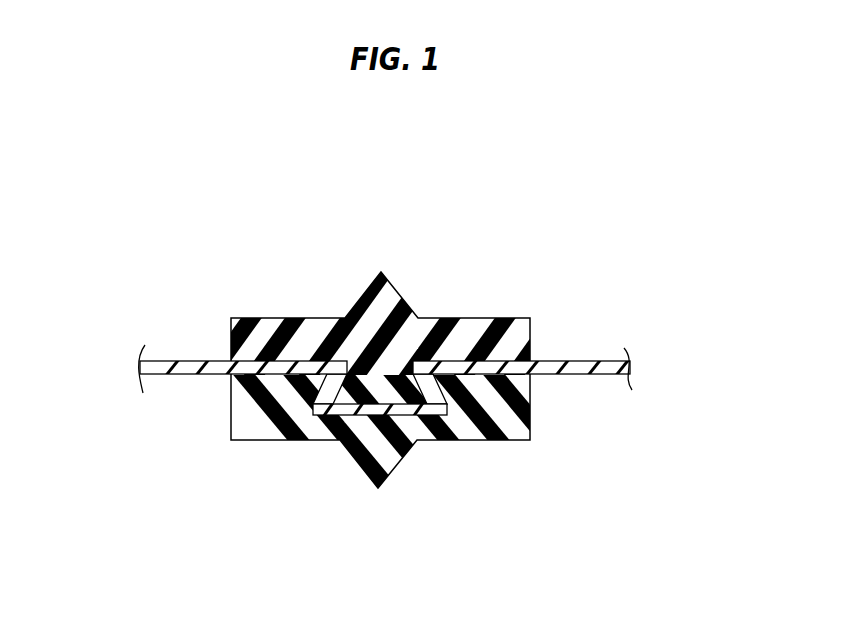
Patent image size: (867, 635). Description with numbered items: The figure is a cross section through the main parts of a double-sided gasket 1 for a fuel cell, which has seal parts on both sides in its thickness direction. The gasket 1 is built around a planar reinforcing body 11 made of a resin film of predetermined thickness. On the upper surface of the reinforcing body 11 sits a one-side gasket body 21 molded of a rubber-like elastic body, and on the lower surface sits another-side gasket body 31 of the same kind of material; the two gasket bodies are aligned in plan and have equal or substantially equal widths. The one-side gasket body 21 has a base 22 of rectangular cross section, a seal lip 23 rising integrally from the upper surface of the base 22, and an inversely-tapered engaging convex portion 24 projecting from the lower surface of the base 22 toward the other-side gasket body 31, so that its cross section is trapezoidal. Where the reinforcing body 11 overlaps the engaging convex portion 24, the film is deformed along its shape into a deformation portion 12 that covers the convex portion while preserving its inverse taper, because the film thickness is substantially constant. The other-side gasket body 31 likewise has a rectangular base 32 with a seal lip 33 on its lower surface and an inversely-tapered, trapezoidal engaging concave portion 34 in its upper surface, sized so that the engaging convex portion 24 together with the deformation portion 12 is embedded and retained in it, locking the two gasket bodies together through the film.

The gasket 1 is at (140, 287).
The reinforcing body 11 is at (630, 370).
The deformation portion 12 is at (368, 445).
The one-side gasket body 21 is at (479, 330).
The base 22 is at (284, 335).
The seal lip 23 is at (381, 272).
The engaging convex portion 24 is at (348, 415).
The other-side gasket body 31 is at (502, 427).
The base 32 is at (253, 423).
The seal lip 33 is at (385, 462).
The engaging concave portion 34 is at (450, 412).